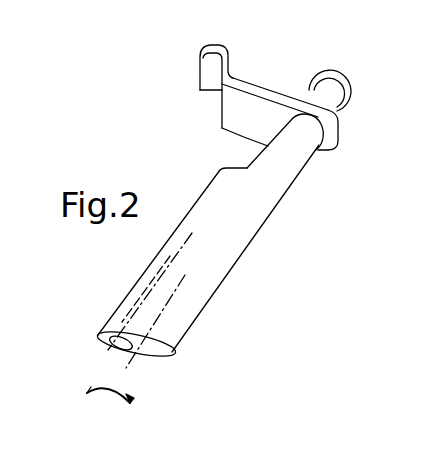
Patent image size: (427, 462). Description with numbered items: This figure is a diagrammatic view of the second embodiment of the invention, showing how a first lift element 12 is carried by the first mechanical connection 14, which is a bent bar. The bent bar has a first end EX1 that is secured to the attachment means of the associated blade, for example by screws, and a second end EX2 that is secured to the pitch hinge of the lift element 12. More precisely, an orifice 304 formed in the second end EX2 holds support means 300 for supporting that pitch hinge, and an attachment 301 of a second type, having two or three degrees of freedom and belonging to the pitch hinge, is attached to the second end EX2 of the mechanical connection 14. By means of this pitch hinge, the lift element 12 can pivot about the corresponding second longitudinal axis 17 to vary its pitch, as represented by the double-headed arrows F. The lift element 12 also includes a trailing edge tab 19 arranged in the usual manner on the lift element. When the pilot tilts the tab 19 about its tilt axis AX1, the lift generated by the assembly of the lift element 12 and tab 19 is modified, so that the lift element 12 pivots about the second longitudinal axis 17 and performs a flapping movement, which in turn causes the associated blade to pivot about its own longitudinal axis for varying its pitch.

The first lift element 12 is at (203, 297).
The first mechanical connection 14 is at (230, 92).
The second longitudinal axis 17 is at (122, 372).
The trailing edge tab 19 is at (111, 342).
The support means 300 is at (352, 96).
The attachment of a second type 301 is at (333, 70).
The orifice 304 is at (277, 105).
The first end EX1 is at (204, 64).
The second end EX2 is at (331, 132).
The tilt axis AX1 is at (109, 346).
The double-headed arrows F is at (110, 405).